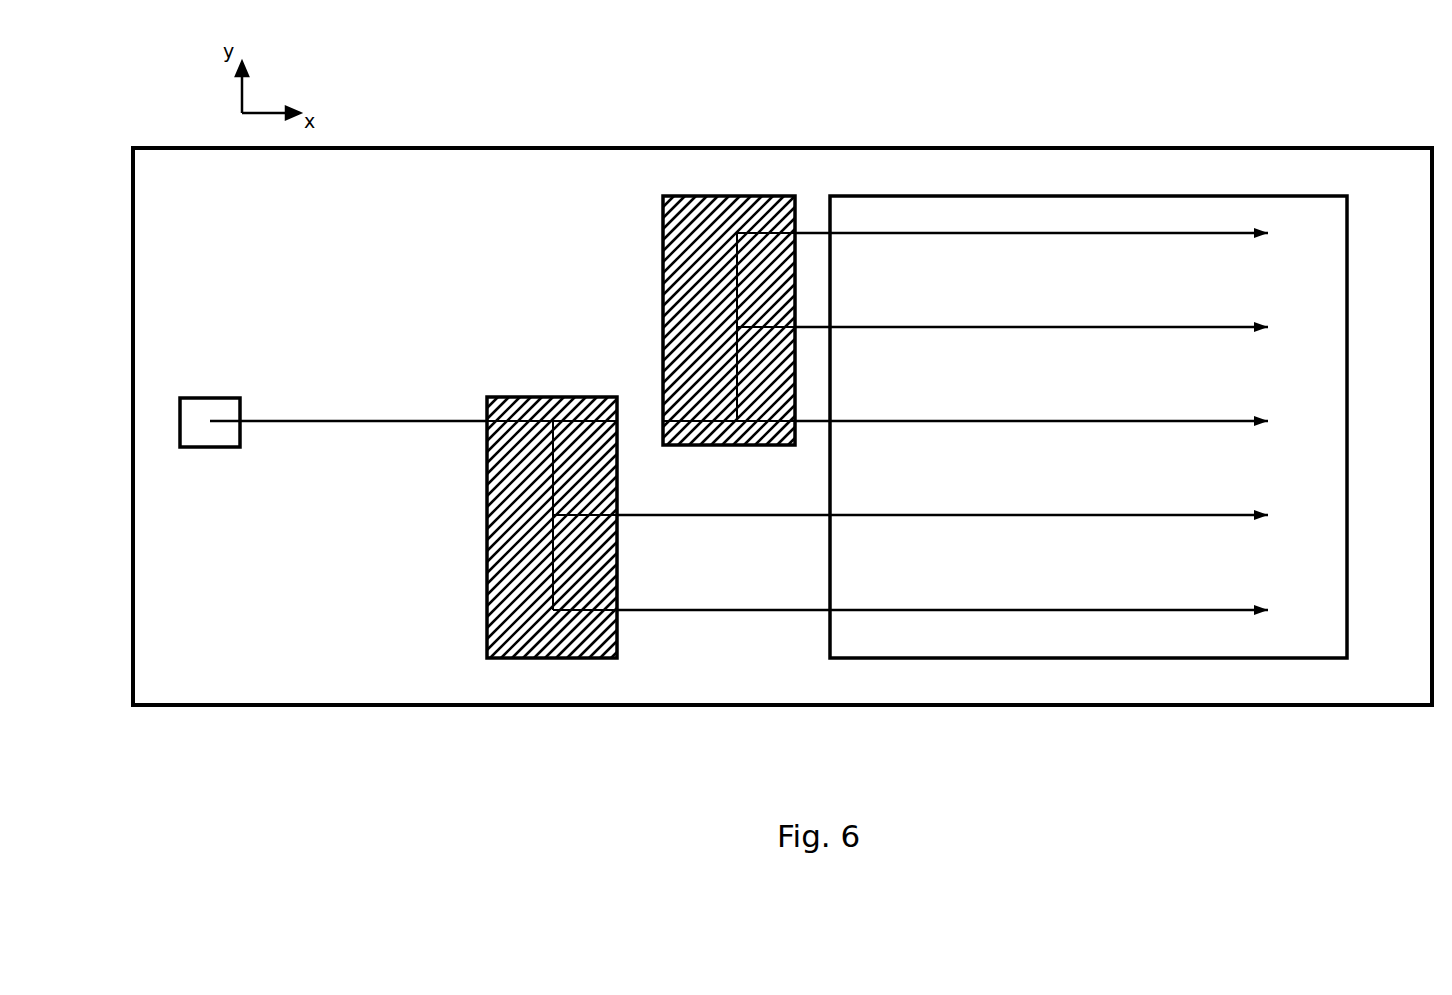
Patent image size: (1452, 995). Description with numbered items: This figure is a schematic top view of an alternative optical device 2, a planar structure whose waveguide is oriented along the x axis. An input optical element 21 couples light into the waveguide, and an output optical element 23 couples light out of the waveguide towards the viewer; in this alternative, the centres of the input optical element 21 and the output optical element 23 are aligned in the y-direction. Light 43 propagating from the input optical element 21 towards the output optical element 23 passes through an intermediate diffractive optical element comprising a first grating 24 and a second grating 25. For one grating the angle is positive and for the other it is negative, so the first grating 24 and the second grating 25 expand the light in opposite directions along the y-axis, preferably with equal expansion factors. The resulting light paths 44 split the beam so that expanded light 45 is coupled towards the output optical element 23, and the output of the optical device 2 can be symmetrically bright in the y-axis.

The optical device 2 is at (130, 602).
The input optical element 21 is at (213, 448).
The output optical element 23 is at (1017, 660).
The first grating 24 is at (535, 662).
The second grating 25 is at (664, 226).
The light 43 is at (355, 415).
The waveguide branches 44 is at (550, 552).
The expanded light 45 is at (898, 238).